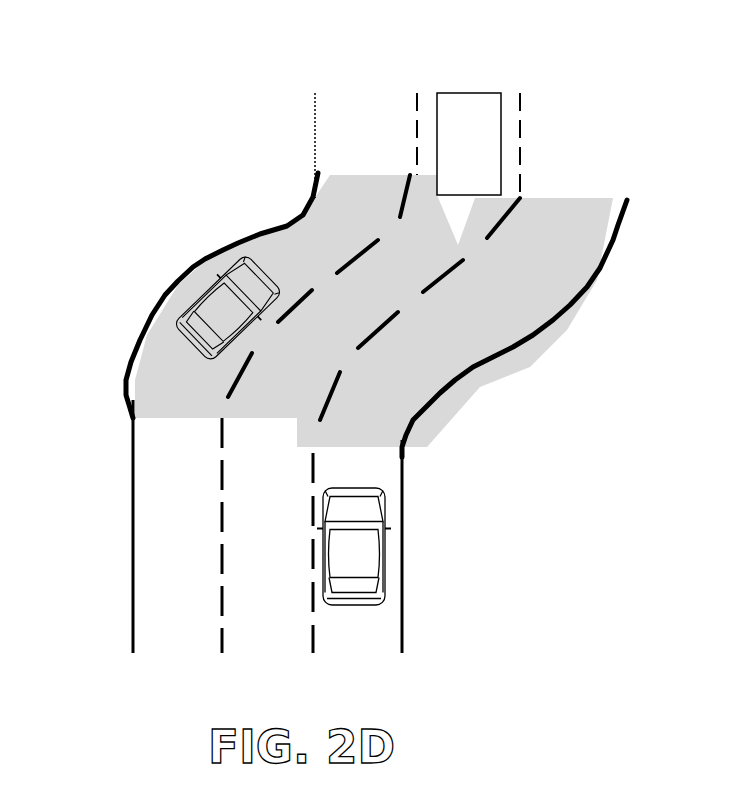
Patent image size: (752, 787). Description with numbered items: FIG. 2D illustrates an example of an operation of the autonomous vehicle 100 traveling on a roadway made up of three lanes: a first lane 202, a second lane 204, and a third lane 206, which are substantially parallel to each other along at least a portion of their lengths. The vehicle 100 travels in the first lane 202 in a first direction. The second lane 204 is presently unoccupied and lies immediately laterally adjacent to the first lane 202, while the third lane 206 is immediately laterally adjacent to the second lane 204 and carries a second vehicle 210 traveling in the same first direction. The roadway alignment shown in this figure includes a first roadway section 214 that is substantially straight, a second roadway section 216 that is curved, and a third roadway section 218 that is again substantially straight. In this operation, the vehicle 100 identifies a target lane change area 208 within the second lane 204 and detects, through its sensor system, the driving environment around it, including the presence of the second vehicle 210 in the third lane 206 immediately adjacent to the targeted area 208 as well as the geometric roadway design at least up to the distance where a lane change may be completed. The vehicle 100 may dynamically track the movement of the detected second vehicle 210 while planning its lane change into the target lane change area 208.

The vehicle 100 is at (388, 583).
The first lane 202 is at (331, 649).
The second lane 204 is at (235, 651).
The third lane 206 is at (147, 651).
The target lane change area 208 is at (449, 155).
The second vehicle 210 is at (247, 278).
The first roadway section 214 is at (138, 537).
The second roadway section 216 is at (457, 332).
The third roadway section 218 is at (338, 112).